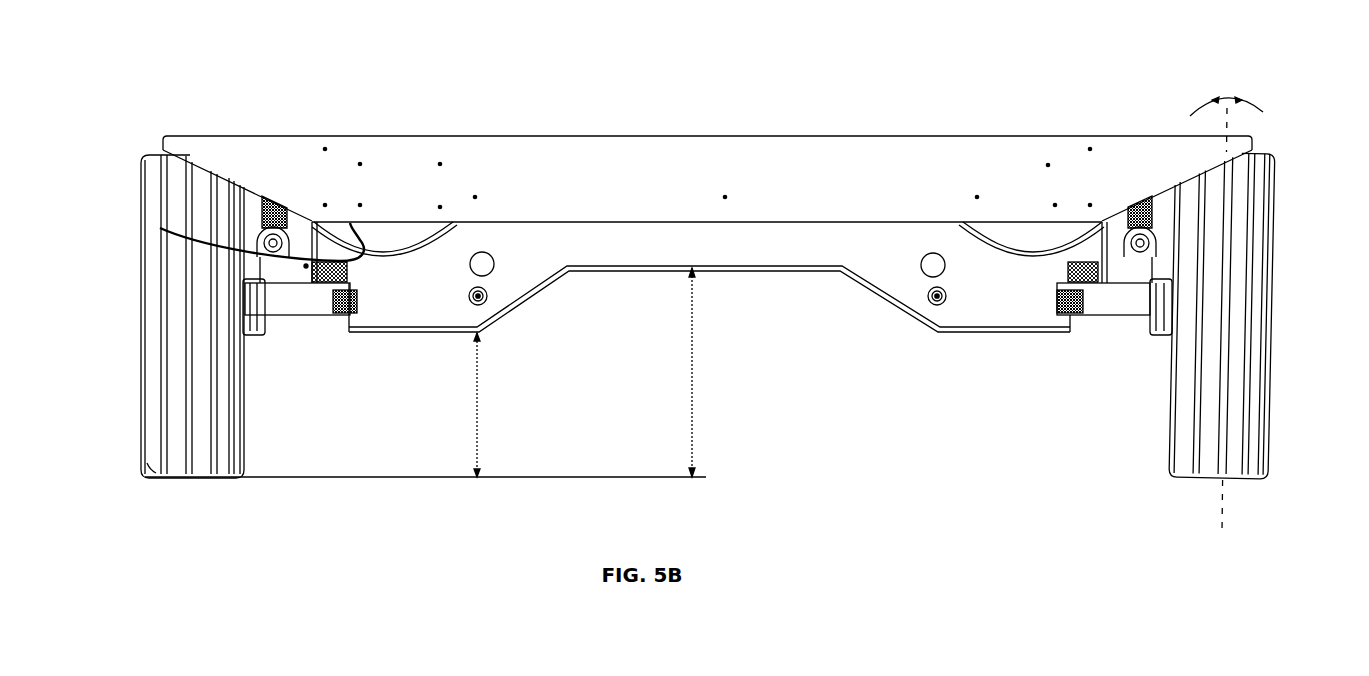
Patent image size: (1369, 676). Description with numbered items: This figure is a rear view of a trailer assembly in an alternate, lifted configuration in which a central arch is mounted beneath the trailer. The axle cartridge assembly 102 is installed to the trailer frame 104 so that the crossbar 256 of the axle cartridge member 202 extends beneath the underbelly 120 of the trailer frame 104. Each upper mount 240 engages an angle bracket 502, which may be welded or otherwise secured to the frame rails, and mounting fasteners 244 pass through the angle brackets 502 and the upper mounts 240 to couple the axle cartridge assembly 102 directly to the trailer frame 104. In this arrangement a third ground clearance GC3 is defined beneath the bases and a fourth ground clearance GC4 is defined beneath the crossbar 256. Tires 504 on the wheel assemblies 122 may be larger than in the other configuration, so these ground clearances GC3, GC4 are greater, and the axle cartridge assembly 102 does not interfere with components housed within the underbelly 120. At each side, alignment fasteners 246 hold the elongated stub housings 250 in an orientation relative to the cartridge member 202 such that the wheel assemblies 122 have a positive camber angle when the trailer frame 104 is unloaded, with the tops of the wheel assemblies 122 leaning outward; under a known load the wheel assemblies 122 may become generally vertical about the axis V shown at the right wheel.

The axle cartridge assembly 102 is at (1274, 284).
The trailer frame 104 is at (1185, 136).
The underbelly 120 is at (770, 174).
The wheel assemblies 122 is at (142, 322).
The axle cartridge member 202 is at (906, 306).
The upper mounts 240 is at (305, 268).
The mounting fasteners 244 is at (306, 266).
The alignment fasteners 246 is at (940, 302).
The elongated stub housings 250 is at (1105, 312).
The crossbar 256 is at (820, 228).
The angle bracket 502 is at (215, 237).
The tires 504 is at (147, 463).
The vertical axis V is at (1231, 314).
The third ground clearance GC3 is at (477, 405).
The fourth ground clearance GC4 is at (694, 372).